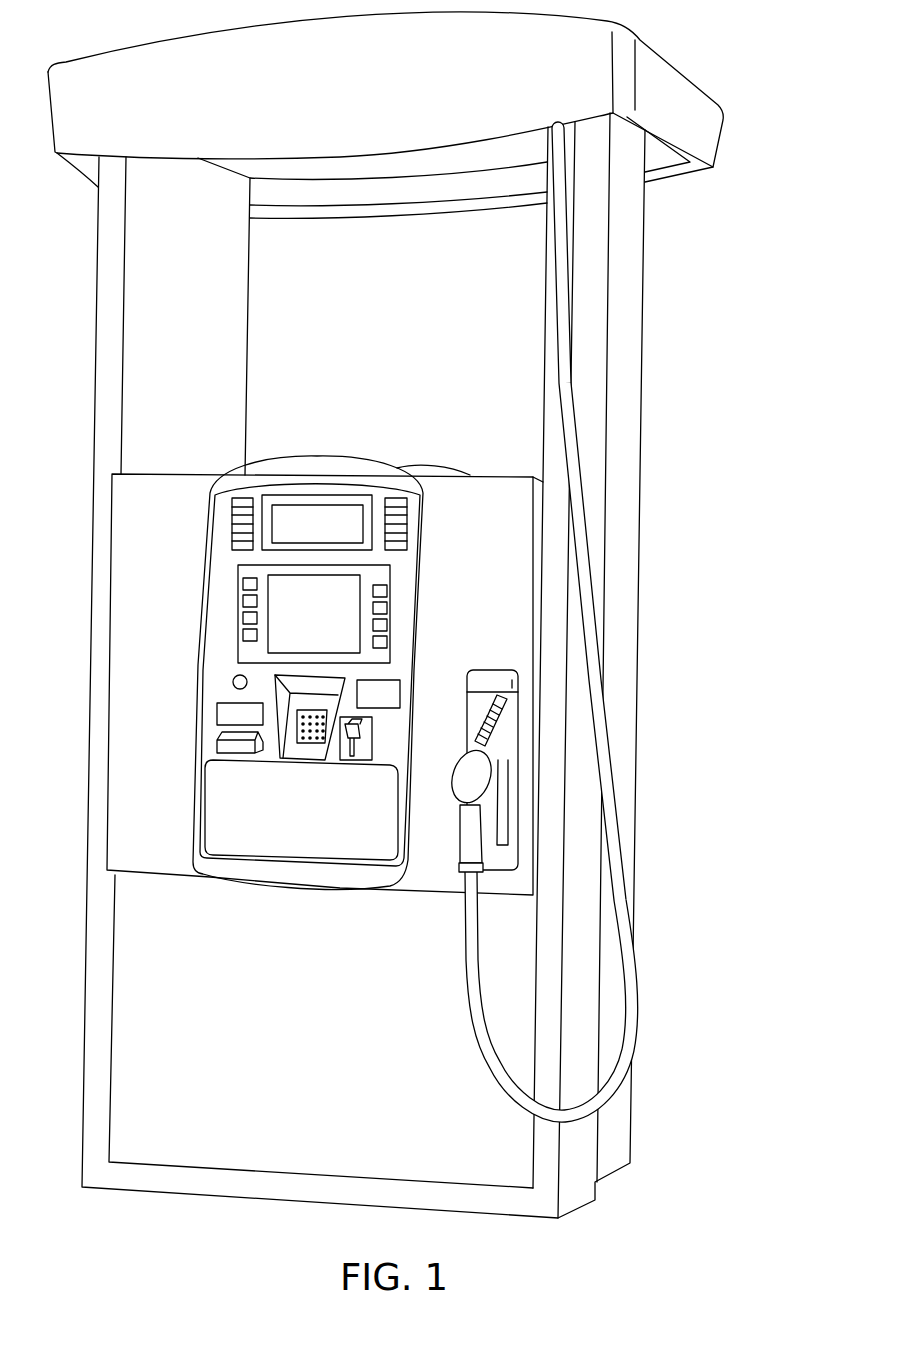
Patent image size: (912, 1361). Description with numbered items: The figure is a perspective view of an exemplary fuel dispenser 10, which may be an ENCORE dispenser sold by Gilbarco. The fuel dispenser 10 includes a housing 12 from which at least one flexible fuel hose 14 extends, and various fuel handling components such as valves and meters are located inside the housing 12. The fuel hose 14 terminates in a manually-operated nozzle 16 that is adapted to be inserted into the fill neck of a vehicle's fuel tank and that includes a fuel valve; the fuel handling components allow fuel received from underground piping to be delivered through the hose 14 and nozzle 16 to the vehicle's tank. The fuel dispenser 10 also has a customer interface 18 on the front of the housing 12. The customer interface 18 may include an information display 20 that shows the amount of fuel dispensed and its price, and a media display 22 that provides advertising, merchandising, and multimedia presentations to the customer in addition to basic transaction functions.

The fuel dispenser 10 is at (418, 609).
The housing 12 is at (642, 497).
The flexible fuel hose 14 is at (598, 657).
The manually-operated nozzle 16 is at (473, 845).
The customer interface 18 is at (331, 644).
The information display 20 is at (333, 497).
The media display 22 is at (357, 585).